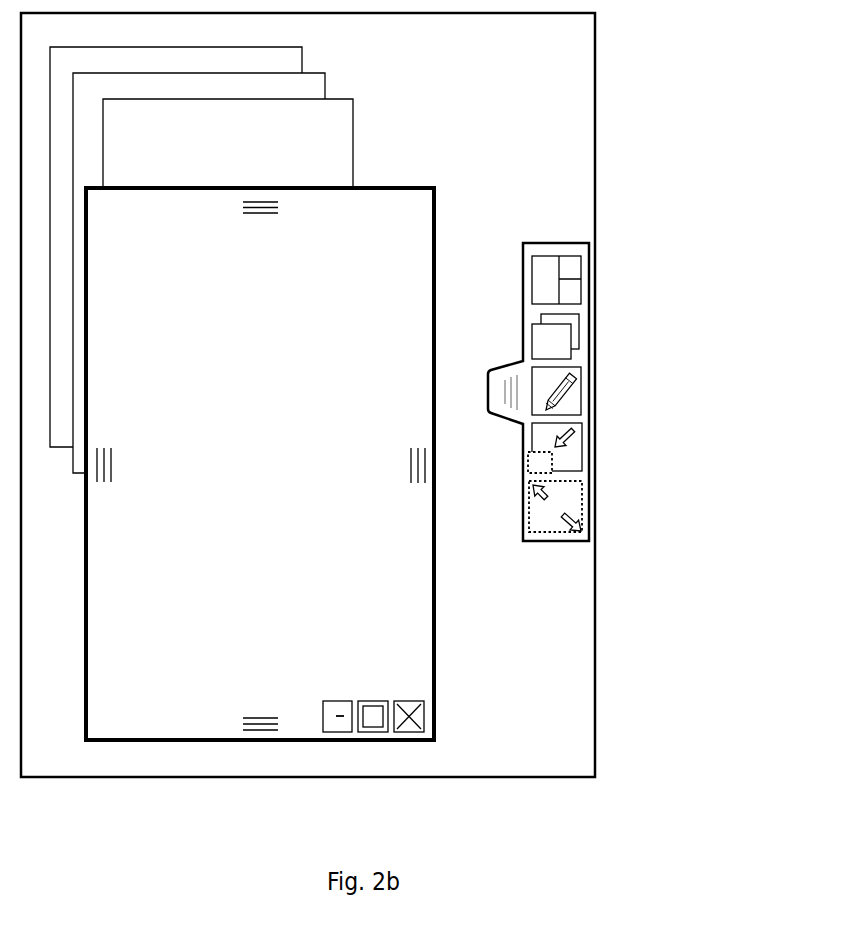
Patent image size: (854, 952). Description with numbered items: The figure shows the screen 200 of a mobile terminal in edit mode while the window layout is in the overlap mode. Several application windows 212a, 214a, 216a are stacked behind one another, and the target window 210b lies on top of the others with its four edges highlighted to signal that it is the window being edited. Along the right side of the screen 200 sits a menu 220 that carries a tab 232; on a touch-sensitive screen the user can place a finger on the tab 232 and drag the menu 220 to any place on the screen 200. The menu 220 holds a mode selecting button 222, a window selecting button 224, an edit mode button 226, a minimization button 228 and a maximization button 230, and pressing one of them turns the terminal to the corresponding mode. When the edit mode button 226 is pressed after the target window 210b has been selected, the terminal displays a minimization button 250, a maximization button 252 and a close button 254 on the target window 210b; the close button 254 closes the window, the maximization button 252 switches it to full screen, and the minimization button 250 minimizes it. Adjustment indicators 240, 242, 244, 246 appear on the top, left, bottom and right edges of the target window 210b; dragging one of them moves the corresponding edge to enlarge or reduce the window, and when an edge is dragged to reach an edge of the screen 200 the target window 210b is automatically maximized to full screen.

The screen 200 is at (540, 66).
The target window 210b is at (260, 464).
The window 212a is at (228, 143).
The window 214a is at (199, 273).
The window 216a is at (176, 247).
The menu 220 is at (578, 243).
The mode selecting button 222 is at (581, 279).
The window selecting button 224 is at (572, 340).
The edit mode button 226 is at (582, 395).
The minimization button 228 is at (582, 445).
The maximization button 230 is at (582, 505).
The tab 232 is at (500, 363).
The adjustment indicator 240 is at (263, 223).
The adjustment indicator 242 is at (128, 465).
The adjustment indicator 244 is at (263, 707).
The adjustment indicator 246 is at (393, 465).
The minimization button 250 is at (329, 728).
The maximization button 252 is at (375, 728).
The close button 254 is at (415, 728).